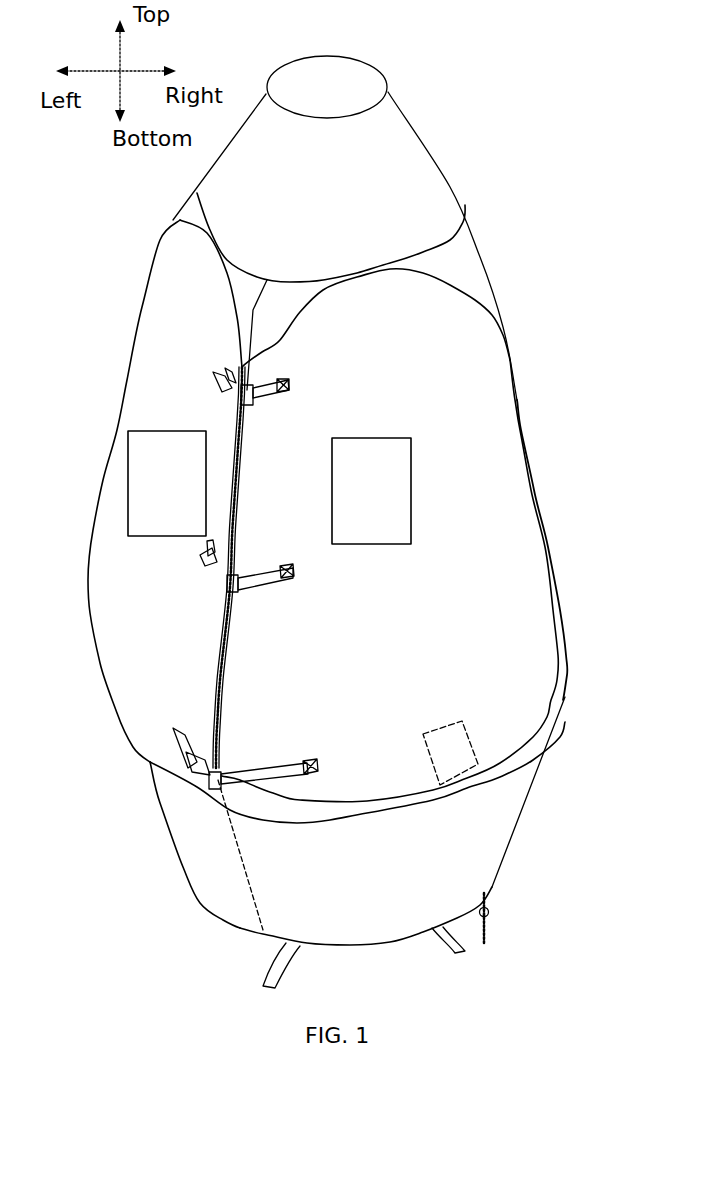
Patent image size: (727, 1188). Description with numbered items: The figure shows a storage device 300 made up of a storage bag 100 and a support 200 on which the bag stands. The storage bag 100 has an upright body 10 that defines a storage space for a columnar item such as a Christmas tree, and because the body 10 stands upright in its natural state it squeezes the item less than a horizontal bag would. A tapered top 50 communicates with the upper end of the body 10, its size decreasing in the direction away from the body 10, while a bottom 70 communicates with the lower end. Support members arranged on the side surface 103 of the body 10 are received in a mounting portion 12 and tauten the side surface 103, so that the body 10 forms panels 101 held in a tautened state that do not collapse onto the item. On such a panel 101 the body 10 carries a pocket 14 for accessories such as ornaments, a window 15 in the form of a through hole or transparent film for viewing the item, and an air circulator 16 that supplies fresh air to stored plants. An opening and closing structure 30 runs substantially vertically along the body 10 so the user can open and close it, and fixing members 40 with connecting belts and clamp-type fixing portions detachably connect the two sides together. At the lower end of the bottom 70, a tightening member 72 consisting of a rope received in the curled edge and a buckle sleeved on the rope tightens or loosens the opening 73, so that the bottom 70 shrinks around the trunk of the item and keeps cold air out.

The storage device 300 is at (338, 33).
The storage bag 100 is at (150, 208).
The top 50 is at (423, 173).
The body 10 is at (465, 282).
The side surface 103 is at (470, 347).
The opening and closing structure 30 is at (260, 310).
The mounting portion 12 is at (527, 440).
The pocket 14 is at (122, 472).
The window 15 is at (413, 507).
The panel 101 is at (498, 613).
The fixing member 40 is at (213, 588).
The air circulator 16 is at (467, 740).
The bottom 70 is at (497, 832).
The tightening member 72 is at (490, 910).
The opening 73 is at (407, 943).
The support 200 is at (248, 963).